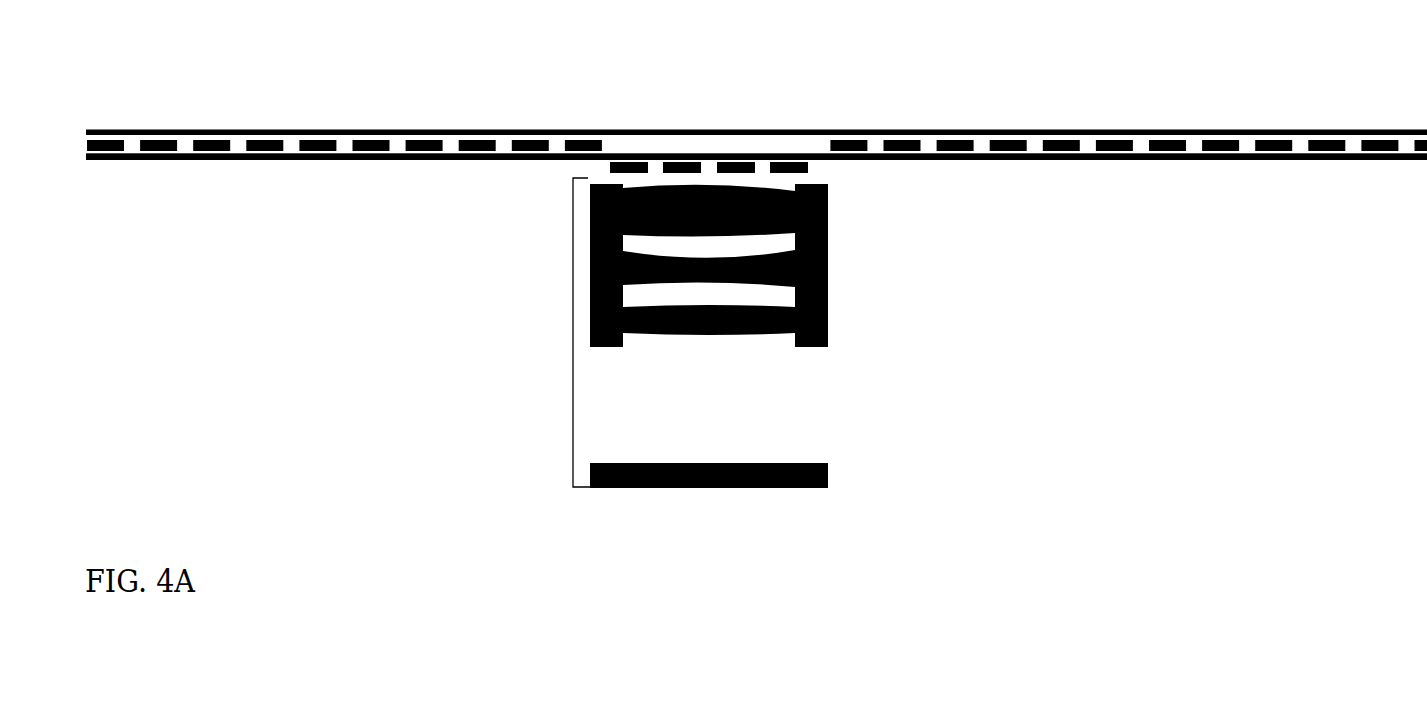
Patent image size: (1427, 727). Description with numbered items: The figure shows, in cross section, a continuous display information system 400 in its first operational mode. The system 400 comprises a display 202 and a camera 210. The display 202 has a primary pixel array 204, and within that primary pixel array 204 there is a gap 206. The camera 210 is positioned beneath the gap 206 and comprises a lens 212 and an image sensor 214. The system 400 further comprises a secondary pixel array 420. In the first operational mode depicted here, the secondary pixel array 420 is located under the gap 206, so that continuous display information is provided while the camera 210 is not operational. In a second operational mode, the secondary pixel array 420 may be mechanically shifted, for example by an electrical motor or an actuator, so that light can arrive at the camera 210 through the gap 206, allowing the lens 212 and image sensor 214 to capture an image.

The continuous display information system 400 is at (238, 49).
The display 202 is at (236, 130).
The primary pixel array 204 is at (335, 155).
The gap 206 is at (672, 142).
The secondary pixel array 420 is at (610, 168).
The camera 210 is at (715, 343).
The lens 212 is at (828, 244).
The image sensor 214 is at (828, 483).